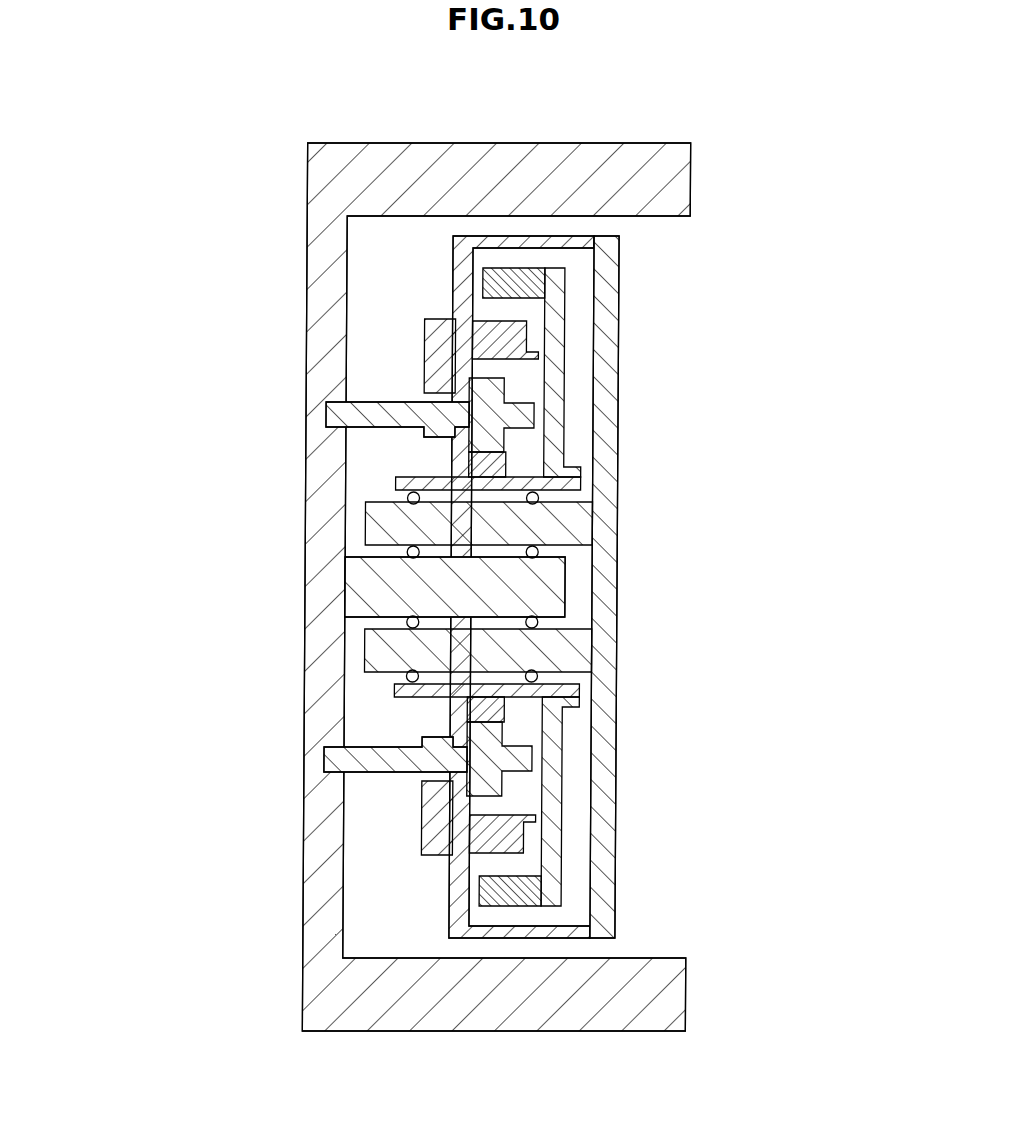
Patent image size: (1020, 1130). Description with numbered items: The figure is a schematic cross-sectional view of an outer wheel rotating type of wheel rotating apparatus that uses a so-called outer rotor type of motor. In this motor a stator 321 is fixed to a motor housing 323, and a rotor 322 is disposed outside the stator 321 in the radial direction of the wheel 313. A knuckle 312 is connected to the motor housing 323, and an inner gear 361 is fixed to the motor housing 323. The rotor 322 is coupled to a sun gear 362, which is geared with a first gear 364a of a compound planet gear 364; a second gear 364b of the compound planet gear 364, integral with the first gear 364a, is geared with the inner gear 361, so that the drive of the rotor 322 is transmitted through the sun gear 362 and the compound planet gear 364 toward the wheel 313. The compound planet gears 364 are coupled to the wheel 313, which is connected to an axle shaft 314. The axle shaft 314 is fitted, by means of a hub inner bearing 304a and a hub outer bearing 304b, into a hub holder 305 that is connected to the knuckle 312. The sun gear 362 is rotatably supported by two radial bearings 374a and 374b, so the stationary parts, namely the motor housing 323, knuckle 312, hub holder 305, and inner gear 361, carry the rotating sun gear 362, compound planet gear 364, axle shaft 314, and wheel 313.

The motor housing 323 is at (509, 244).
The rotor 322 is at (530, 285).
The stator 321 is at (517, 335).
The knuckle 312 is at (607, 400).
The first gear 364a is at (648, 448).
The sun gear 362 is at (497, 465).
The hub holder 305 is at (587, 523).
The hub inner bearing 304a is at (539, 625).
The radial bearing 374a is at (539, 678).
The inner gear 361 is at (433, 347).
The compound planet gear 364 is at (436, 587).
The second gear 364b is at (438, 433).
The axle shaft 314 is at (360, 563).
The hub outer bearing 304b is at (407, 622).
The radial bearing 374b is at (240, 741).
The wheel 313 is at (310, 870).